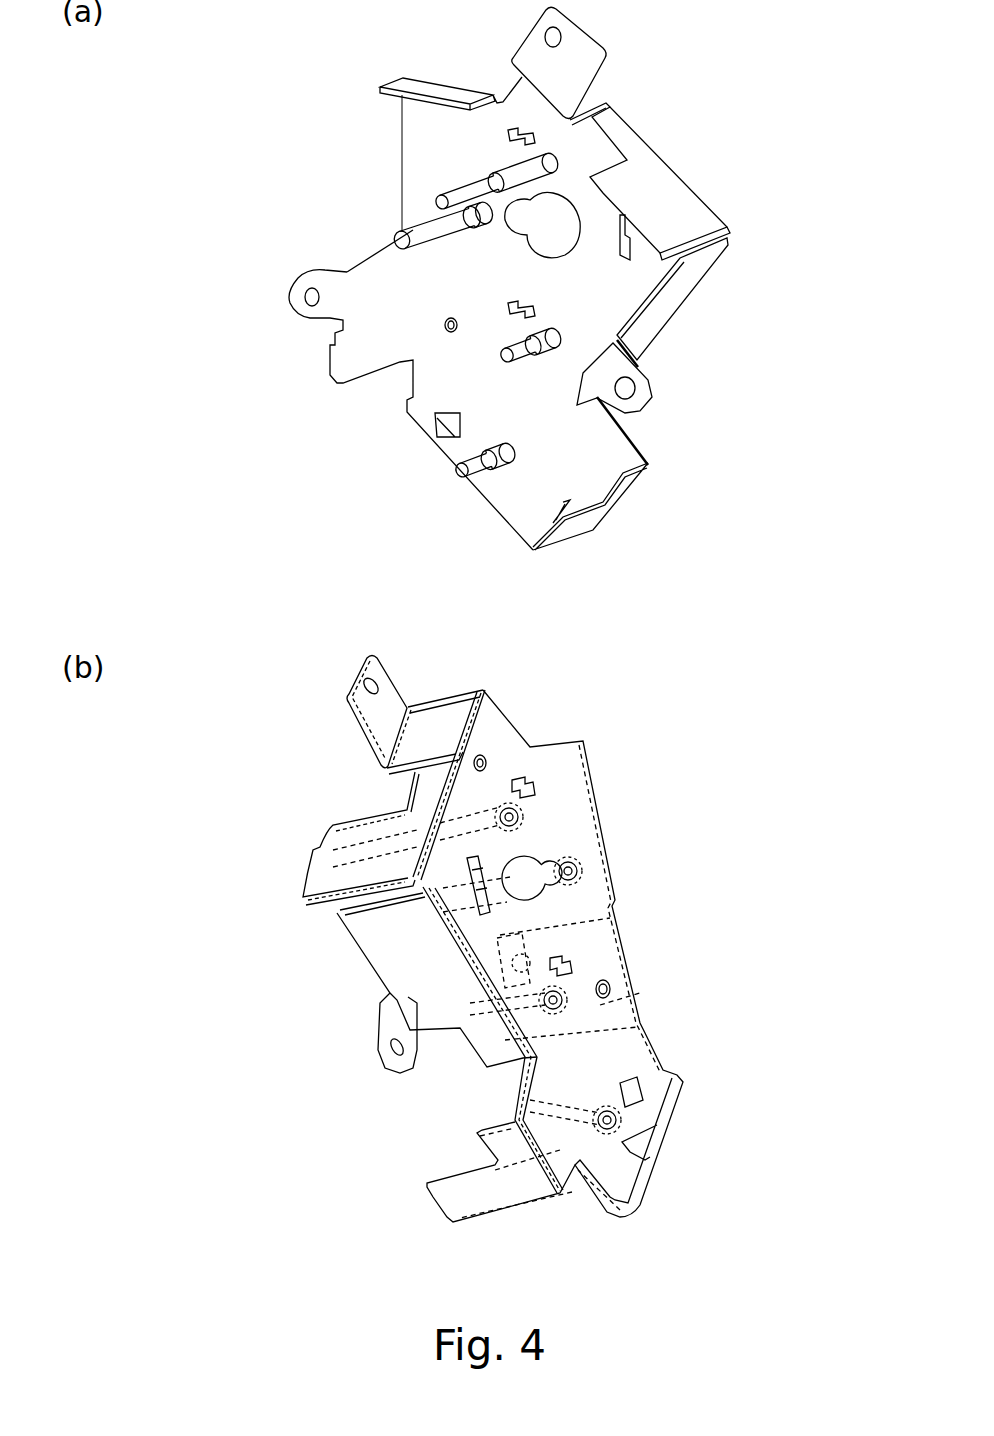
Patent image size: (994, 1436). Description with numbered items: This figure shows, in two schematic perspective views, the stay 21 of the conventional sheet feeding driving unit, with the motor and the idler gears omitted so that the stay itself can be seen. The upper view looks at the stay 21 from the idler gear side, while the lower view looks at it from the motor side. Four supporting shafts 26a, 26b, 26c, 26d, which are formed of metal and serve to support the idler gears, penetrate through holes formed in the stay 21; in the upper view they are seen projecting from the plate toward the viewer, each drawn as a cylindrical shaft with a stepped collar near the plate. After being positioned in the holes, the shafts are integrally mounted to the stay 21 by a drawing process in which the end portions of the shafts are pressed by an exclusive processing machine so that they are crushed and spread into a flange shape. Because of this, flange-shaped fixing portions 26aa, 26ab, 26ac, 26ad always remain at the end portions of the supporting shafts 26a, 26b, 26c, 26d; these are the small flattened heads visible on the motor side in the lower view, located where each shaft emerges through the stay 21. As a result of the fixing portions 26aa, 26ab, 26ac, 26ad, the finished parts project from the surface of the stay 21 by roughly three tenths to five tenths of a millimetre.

The stay 21 is at (690, 207).
The supporting shaft 26a is at (457, 192).
The supporting shaft 26b is at (402, 232).
The supporting shaft 26c is at (525, 357).
The supporting shaft 26d is at (480, 467).
The fixing portion 26aa is at (523, 818).
The fixing portion 26ab is at (578, 872).
The fixing portion 26ac is at (560, 1005).
The fixing portion 26ad is at (615, 1120).